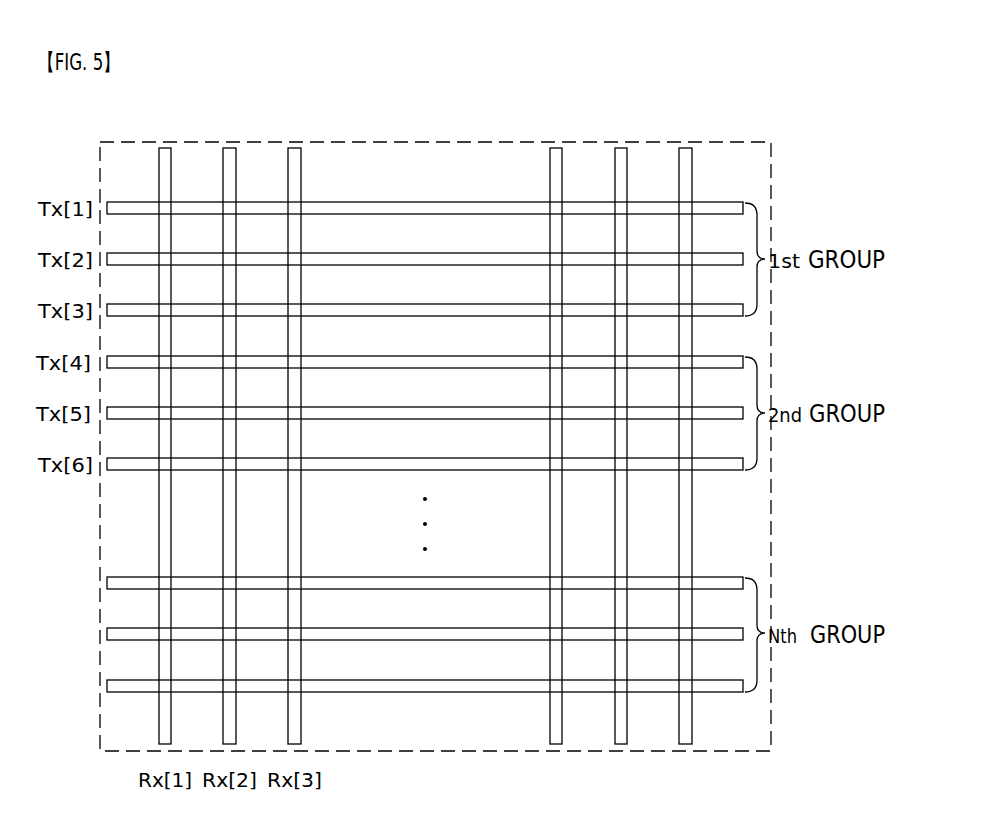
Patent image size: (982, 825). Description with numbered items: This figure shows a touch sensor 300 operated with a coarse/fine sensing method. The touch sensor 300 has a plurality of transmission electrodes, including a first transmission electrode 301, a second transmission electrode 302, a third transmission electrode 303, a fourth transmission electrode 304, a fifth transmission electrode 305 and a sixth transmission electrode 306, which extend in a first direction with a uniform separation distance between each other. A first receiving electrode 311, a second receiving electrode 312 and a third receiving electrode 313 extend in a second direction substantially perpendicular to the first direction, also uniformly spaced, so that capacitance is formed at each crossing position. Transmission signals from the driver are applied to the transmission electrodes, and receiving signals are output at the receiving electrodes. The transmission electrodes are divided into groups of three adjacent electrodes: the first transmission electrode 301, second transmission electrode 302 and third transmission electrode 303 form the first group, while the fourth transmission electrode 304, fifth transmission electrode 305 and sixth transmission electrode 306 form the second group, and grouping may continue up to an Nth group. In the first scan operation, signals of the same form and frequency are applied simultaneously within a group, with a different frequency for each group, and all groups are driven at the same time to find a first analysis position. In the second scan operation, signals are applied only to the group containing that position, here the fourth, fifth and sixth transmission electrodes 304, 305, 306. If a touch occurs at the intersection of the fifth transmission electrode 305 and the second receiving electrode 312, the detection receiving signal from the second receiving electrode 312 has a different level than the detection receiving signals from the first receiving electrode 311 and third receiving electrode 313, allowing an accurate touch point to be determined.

The touch sensor 300 is at (657, 142).
The first transmission electrode 301 is at (425, 202).
The second transmission electrode 302 is at (431, 242).
The third transmission electrode 303 is at (431, 293).
The fourth transmission electrode 304 is at (431, 345).
The fifth transmission electrode 305 is at (431, 396).
The sixth transmission electrode 306 is at (431, 448).
The first receiving electrode 311 is at (165, 145).
The second receiving electrode 312 is at (229, 145).
The third receiving electrode 313 is at (294, 145).